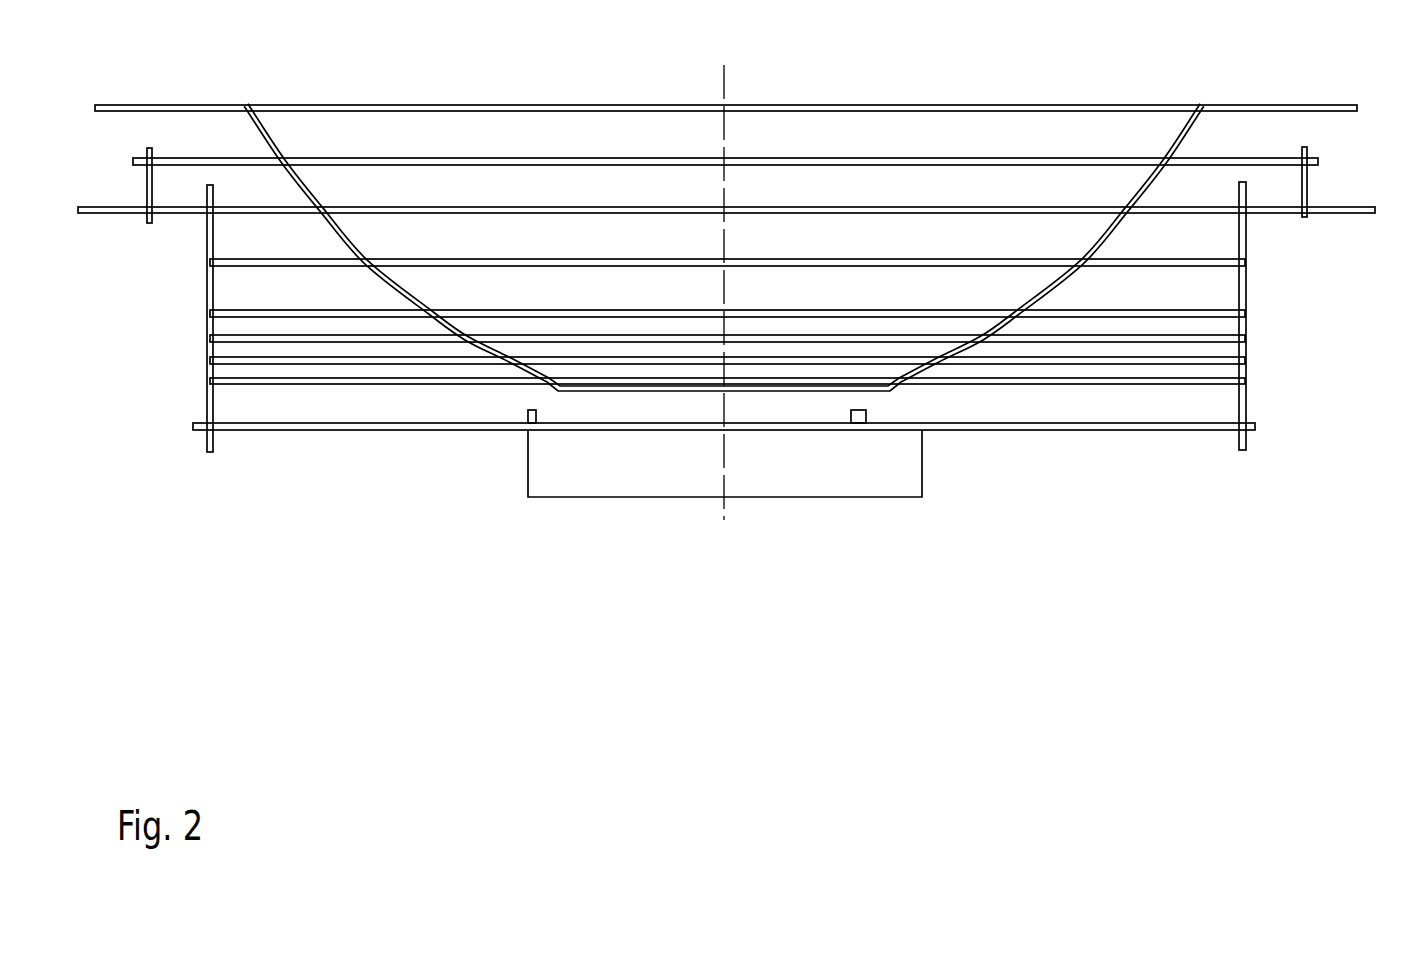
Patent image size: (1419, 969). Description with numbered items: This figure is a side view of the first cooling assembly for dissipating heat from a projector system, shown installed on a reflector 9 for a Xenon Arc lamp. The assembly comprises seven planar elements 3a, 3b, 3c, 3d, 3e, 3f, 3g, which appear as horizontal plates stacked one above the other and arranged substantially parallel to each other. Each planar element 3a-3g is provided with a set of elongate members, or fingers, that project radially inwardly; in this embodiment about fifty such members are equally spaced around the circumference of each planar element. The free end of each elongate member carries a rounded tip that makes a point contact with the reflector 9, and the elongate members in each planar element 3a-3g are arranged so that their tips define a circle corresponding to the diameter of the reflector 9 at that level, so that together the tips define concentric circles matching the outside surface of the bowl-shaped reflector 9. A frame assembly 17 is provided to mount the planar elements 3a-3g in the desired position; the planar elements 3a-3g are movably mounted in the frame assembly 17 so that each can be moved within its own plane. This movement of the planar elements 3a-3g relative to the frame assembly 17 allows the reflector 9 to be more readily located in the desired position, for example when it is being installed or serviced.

The reflector 9 is at (268, 132).
The planar element 3a is at (1273, 156).
The planar element 3b is at (1277, 204).
The planar element 3c is at (1218, 258).
The planar element 3d is at (1212, 309).
The planar element 3e is at (1207, 334).
The planar element 3f is at (1212, 357).
The planar element 3g is at (1247, 376).
The frame assembly 17 is at (1250, 408).